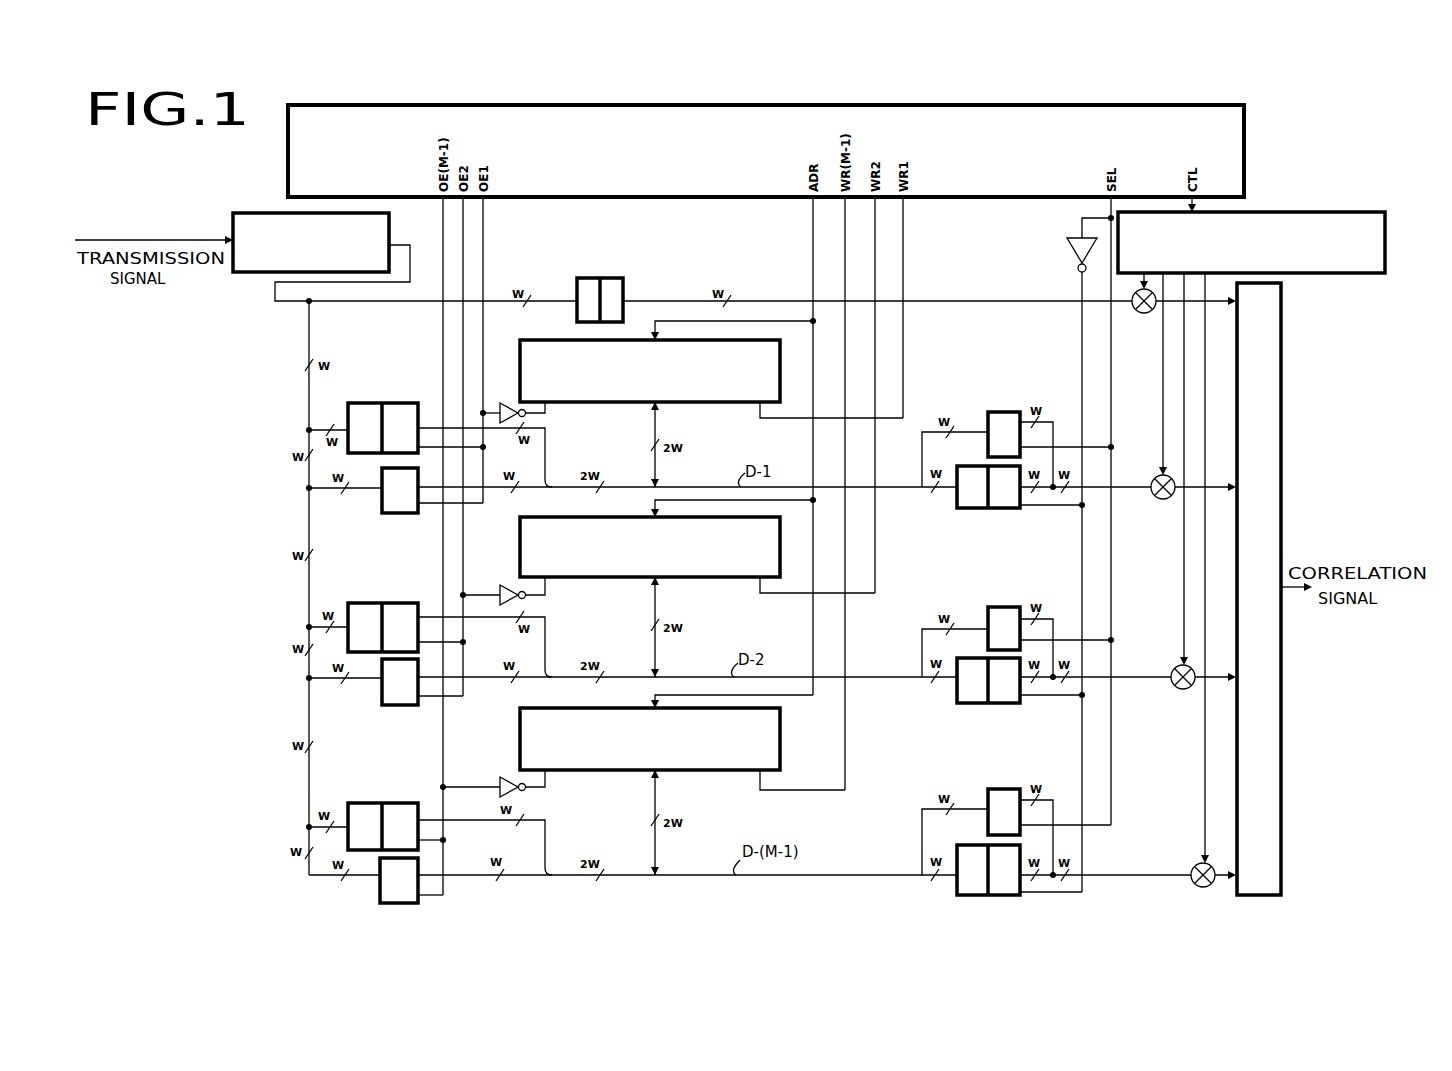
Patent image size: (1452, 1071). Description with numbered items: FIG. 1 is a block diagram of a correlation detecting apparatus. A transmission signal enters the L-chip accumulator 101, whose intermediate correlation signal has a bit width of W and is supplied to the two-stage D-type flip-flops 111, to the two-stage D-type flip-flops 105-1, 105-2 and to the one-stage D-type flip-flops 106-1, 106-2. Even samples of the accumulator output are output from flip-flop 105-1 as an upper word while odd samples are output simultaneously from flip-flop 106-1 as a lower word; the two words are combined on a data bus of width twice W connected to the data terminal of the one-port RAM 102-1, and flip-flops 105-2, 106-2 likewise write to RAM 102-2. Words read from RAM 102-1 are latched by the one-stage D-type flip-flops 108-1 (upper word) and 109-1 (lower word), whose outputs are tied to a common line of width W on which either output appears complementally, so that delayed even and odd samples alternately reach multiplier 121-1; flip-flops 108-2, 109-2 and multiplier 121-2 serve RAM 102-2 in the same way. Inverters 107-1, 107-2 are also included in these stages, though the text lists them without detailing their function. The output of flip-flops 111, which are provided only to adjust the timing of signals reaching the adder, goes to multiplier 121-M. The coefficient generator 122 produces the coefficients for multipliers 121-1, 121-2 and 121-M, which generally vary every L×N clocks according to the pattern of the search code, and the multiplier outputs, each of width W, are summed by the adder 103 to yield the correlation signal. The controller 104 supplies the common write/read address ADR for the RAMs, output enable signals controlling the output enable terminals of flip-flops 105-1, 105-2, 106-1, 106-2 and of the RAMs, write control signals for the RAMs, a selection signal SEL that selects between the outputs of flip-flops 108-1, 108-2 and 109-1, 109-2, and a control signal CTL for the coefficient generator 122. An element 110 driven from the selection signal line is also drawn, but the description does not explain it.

The L-chip accumulator 101 is at (259, 213).
The one port type RAM 102-1 is at (555, 340).
The one port type RAM 102-2 is at (581, 520).
The adder 103 is at (1282, 334).
The controller 104 is at (288, 164).
The two-stage D-type flip-flop 105-1 is at (418, 399).
The two-stage D-type flip-flop 105-2 is at (418, 599).
The one-stage D-type flip-flop 106-1 is at (398, 513).
The one-stage D-type flip-flop 106-2 is at (390, 705).
The inverter 107-1 is at (527, 417).
The inverter 107-2 is at (527, 600).
The one-stage D-type flip-flop 108-1 is at (1020, 412).
The one-stage D-type flip-flop 108-2 is at (1018, 607).
The D-type flip-flop 109-1 is at (1020, 512).
The D-type flip-flop 109-2 is at (1020, 707).
The inverter 110 is at (1066, 246).
The two-stage D-type flip-flop 111 is at (623, 274).
The multiplier 121-M is at (1140, 313).
The multiplier 121-1 is at (1158, 499).
The multiplier 121-2 is at (1178, 689).
The coefficient generator 122 is at (1260, 212).